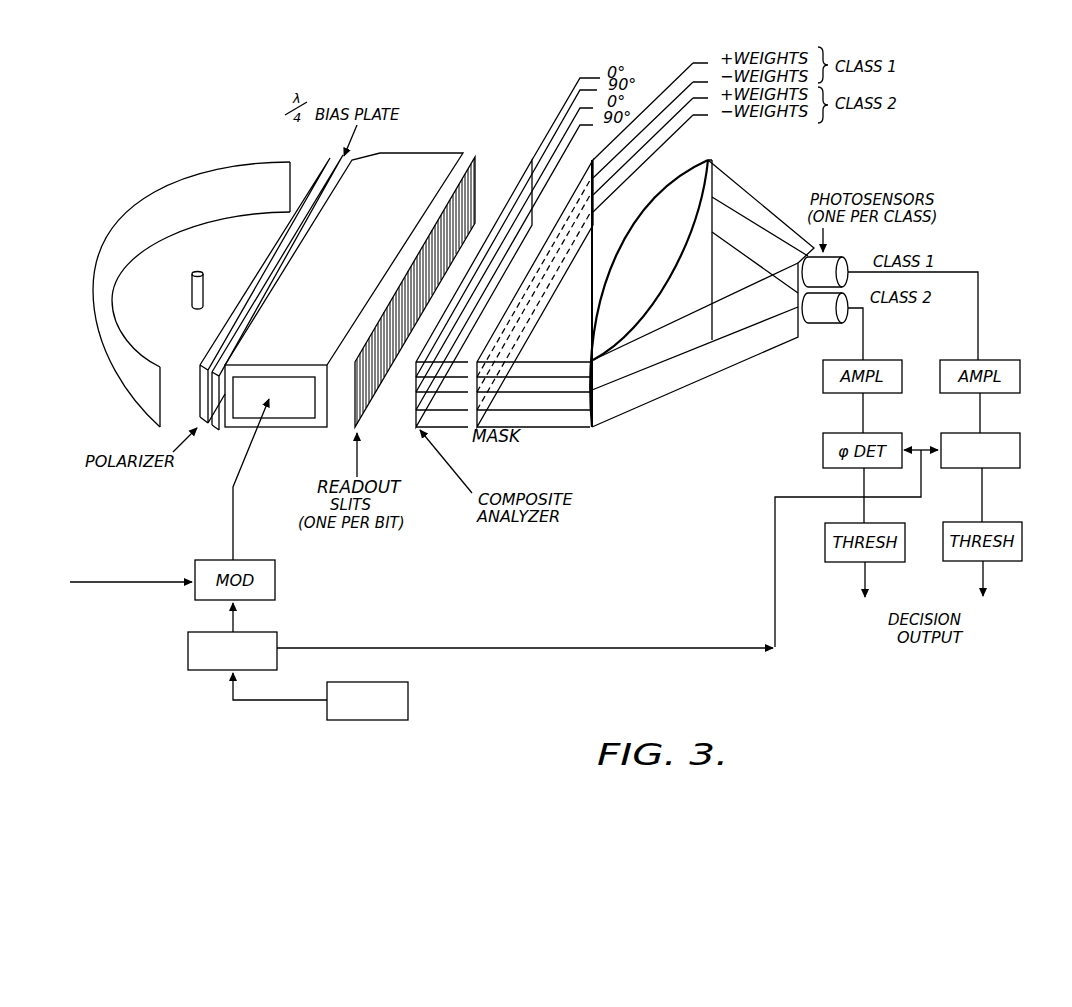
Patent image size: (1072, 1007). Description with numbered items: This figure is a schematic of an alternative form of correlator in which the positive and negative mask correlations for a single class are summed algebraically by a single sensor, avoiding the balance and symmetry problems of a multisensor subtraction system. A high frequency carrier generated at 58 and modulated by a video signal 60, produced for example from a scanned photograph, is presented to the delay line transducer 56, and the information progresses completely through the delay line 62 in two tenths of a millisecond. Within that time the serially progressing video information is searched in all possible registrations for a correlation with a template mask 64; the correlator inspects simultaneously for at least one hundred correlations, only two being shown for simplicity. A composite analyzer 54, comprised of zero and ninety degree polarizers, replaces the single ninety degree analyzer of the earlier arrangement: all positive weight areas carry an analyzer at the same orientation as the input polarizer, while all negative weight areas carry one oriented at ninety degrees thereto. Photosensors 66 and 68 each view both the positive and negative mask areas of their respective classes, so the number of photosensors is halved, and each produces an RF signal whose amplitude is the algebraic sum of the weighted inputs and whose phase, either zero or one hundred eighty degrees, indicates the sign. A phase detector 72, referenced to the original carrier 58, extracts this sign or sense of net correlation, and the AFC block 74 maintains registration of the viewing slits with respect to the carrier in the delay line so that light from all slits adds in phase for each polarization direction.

The composite analyzer 54 is at (517, 187).
The delay line transducer 56 is at (288, 398).
The carrier generator 58 is at (188, 670).
The video signal 60 is at (131, 583).
The delay line 62 is at (413, 160).
The template mask 64 is at (595, 158).
The photosensor 66 is at (843, 258).
The photosensor 68 is at (825, 312).
The phase detector 72 is at (1012, 432).
The AFC block 74 is at (408, 683).